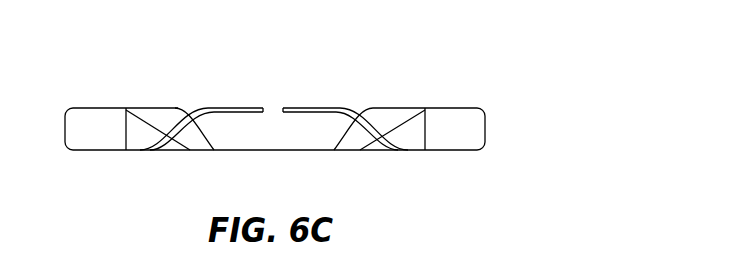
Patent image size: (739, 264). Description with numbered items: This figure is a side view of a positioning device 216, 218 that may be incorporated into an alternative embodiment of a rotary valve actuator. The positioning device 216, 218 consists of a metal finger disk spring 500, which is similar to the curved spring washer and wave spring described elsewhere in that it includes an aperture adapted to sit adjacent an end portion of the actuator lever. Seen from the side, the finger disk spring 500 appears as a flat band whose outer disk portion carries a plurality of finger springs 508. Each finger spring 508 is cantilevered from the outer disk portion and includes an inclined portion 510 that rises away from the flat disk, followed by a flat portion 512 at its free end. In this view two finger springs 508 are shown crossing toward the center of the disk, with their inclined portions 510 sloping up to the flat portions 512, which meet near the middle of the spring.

The finger disk spring 500 is at (481, 104).
The positioning device 216 is at (500, 47).
The positioning device 218 is at (500, 47).
The finger spring 508 is at (208, 105).
The inclined portion 510 is at (186, 138).
The flat portion 512 is at (296, 106).